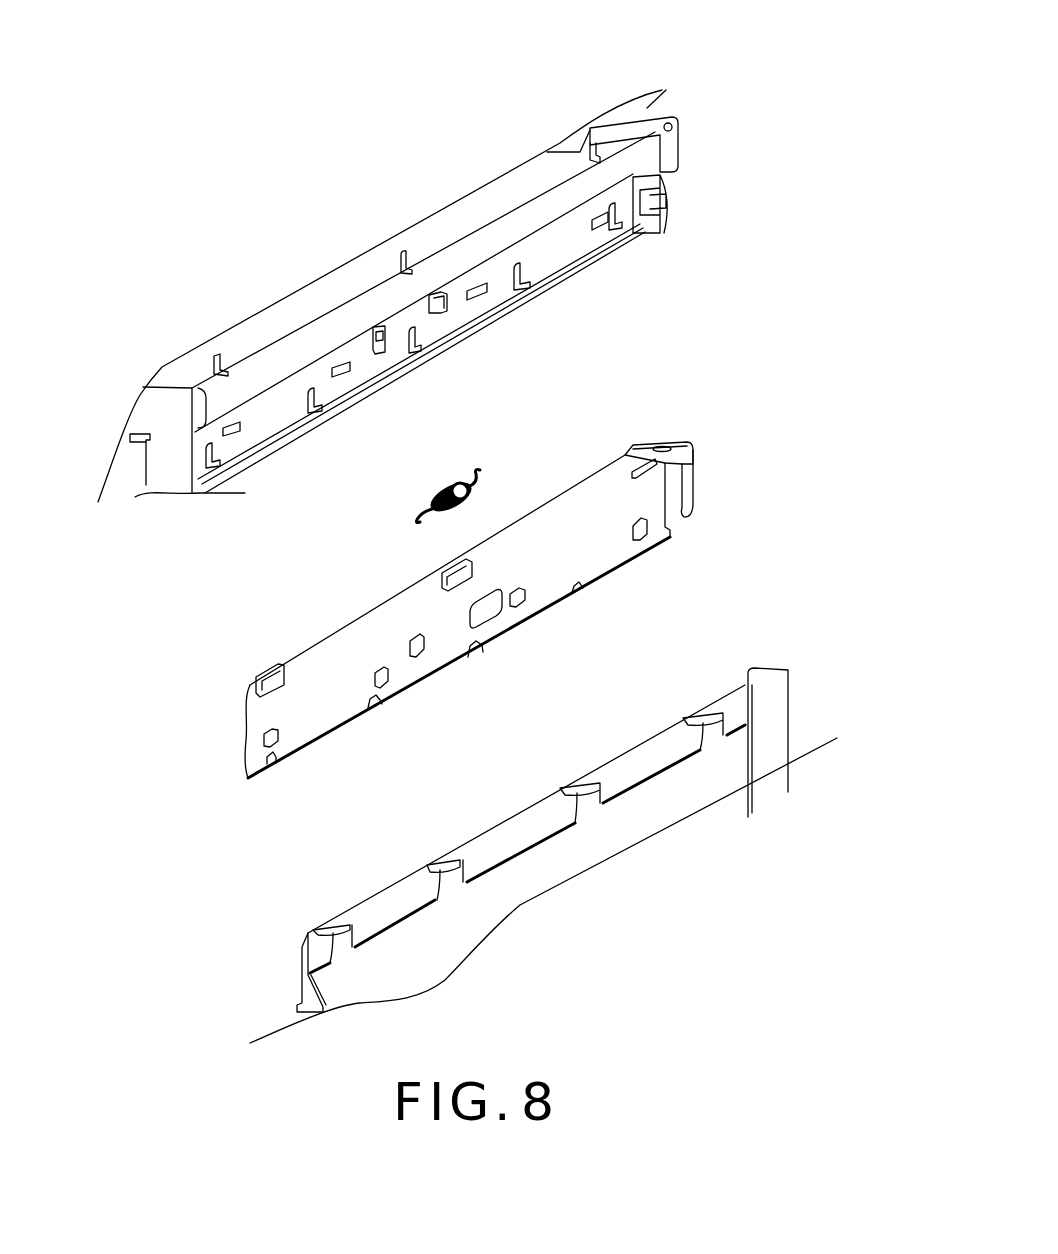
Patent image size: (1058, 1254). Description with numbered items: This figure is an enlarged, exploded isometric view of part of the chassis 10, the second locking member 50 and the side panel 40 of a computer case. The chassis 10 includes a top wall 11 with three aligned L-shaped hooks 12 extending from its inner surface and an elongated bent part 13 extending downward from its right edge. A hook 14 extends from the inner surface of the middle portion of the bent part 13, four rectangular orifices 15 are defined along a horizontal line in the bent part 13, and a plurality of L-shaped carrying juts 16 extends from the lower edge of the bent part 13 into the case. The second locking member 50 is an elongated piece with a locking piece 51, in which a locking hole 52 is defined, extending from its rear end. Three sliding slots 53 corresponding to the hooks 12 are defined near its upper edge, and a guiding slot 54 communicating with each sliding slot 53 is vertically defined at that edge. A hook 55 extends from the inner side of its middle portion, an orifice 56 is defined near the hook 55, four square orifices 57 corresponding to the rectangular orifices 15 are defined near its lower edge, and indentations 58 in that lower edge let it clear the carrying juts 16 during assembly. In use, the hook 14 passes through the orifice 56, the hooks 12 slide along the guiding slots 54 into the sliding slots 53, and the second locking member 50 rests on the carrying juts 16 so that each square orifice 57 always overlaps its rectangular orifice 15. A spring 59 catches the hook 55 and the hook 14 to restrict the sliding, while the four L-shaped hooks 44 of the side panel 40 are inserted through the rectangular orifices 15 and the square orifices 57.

The chassis 10 is at (548, 109).
The top wall 11 is at (640, 120).
The L-shaped hooks 12 is at (398, 265).
The bent part 13 is at (505, 318).
The hook 14 is at (440, 295).
The rectangular orifices 15 is at (240, 432).
The carrying juts 16 is at (418, 350).
The side panel 40 is at (546, 913).
The L-shaped hooks 44 is at (440, 862).
The second locking member 50 is at (306, 792).
The locking piece 51 is at (664, 447).
The locking hole 52 is at (677, 458).
The sliding slots 53 is at (260, 682).
The guiding slot 54 is at (268, 675).
The hook 55 is at (415, 645).
The orifice 56 is at (485, 605).
The square orifices 57 is at (640, 540).
The indentations 58 is at (373, 706).
The spring 59 is at (444, 483).